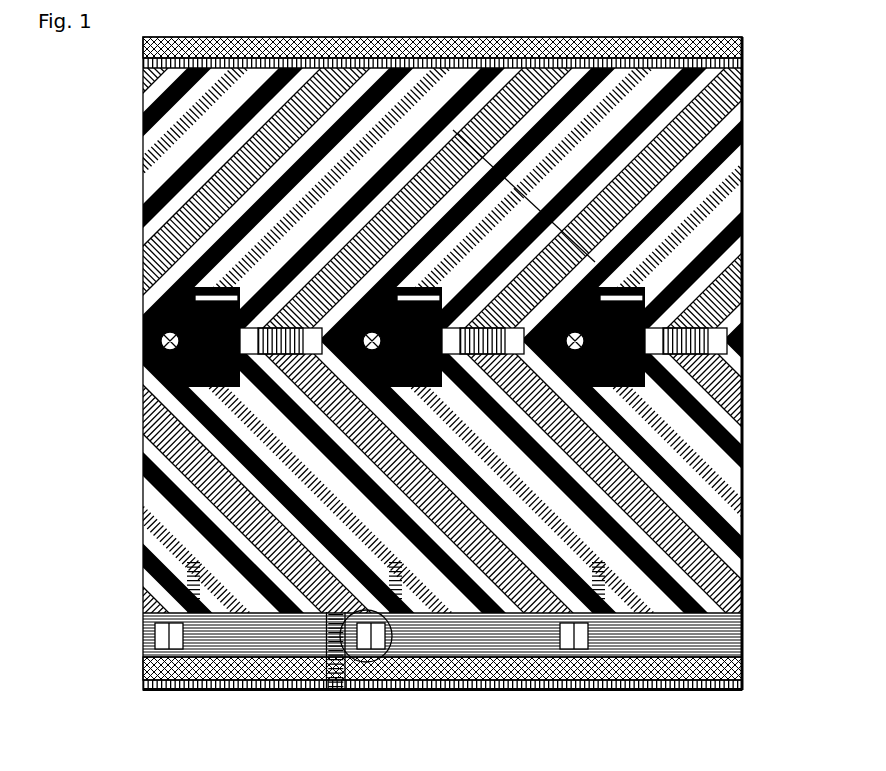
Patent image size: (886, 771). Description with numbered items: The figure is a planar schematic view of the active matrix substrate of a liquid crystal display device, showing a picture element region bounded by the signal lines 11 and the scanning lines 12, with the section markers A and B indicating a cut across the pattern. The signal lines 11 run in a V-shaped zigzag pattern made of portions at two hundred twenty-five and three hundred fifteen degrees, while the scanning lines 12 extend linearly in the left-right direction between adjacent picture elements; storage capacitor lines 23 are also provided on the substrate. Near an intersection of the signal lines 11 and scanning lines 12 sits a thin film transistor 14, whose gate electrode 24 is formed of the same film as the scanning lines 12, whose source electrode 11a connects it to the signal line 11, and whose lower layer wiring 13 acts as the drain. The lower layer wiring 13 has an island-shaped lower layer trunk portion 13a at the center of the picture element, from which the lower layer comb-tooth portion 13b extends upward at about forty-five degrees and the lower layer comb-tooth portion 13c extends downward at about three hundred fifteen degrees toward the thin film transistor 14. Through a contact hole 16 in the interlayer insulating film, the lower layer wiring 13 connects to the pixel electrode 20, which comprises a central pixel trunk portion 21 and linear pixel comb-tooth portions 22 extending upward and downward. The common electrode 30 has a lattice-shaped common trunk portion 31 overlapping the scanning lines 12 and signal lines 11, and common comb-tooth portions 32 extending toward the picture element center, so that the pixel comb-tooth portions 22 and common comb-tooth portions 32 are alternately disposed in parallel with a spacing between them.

The signal line 11 is at (440, 235).
The source electrode 11a is at (328, 690).
The scanning line 12 is at (160, 668).
The lower layer wiring 13 is at (84, 292).
The lower layer trunk portion 13a is at (152, 358).
The lower layer comb-tooth portion 13b is at (195, 297).
The lower layer comb-tooth portion 13c is at (200, 390).
The thin film transistor 14 is at (370, 690).
The contact hole 16 is at (657, 303).
The pixel electrode 20 is at (797, 397).
The pixel trunk portion 21 is at (455, 368).
The pixel comb-tooth portion 22 is at (490, 431).
The storage capacitor line 23 is at (742, 340).
The gate electrode 24 is at (170, 622).
The common electrode 30 is at (797, 74).
The common trunk portion 31 is at (630, 87).
The common comb-tooth portion 32 is at (633, 97).
The section line start A is at (453, 132).
The section line end B is at (595, 262).